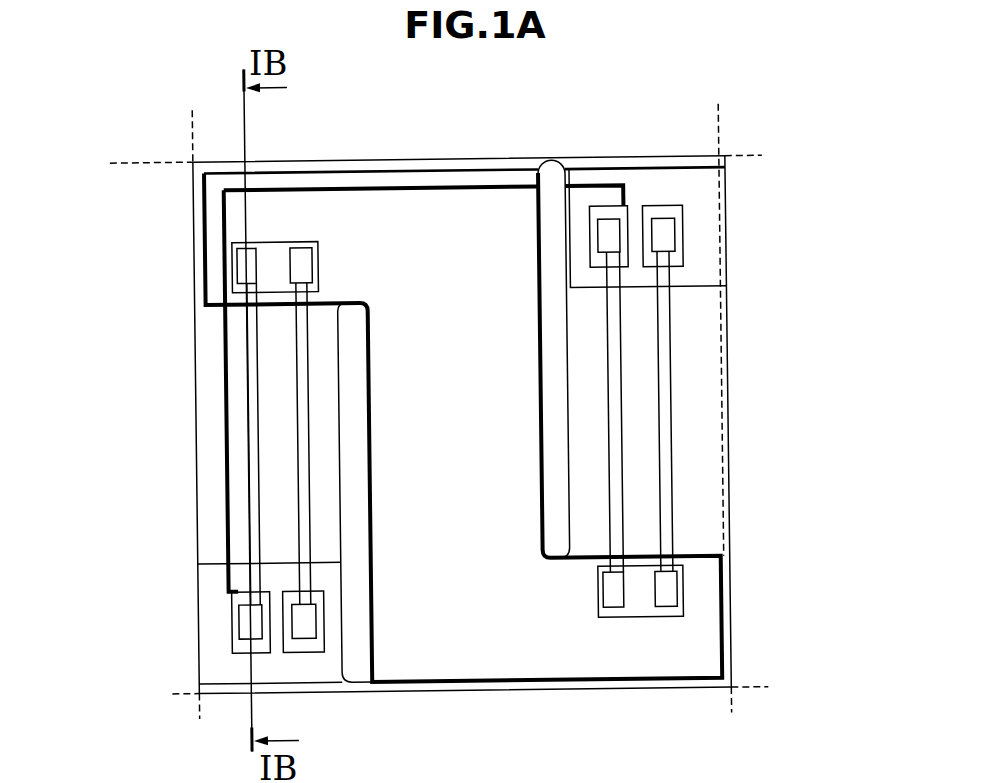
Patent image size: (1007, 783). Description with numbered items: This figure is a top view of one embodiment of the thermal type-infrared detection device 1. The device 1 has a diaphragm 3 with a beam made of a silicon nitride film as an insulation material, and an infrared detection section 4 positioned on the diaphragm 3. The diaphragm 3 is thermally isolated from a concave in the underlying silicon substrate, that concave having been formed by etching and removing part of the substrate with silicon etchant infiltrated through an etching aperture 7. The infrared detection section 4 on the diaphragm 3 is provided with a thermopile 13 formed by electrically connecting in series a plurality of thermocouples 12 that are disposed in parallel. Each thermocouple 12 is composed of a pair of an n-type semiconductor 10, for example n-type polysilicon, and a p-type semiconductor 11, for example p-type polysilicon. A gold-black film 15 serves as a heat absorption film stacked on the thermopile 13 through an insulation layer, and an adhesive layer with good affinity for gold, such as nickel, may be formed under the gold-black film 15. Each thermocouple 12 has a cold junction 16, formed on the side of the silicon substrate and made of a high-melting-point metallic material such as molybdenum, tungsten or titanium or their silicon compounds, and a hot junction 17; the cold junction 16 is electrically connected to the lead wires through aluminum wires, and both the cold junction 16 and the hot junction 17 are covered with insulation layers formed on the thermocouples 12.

The infrared detection device 1 is at (770, 177).
The diaphragm 3 is at (699, 458).
The infrared detection section 4 is at (609, 661).
The etching aperture 7 is at (728, 527).
The n-type semiconductor 10 is at (663, 320).
The p-type semiconductor 11 is at (613, 383).
The thermocouple 12 is at (830, 287).
The thermopile 13 is at (212, 601).
The gold-black film 15 is at (457, 630).
The cold junction 16 is at (652, 187).
The hot junction 17 is at (272, 248).